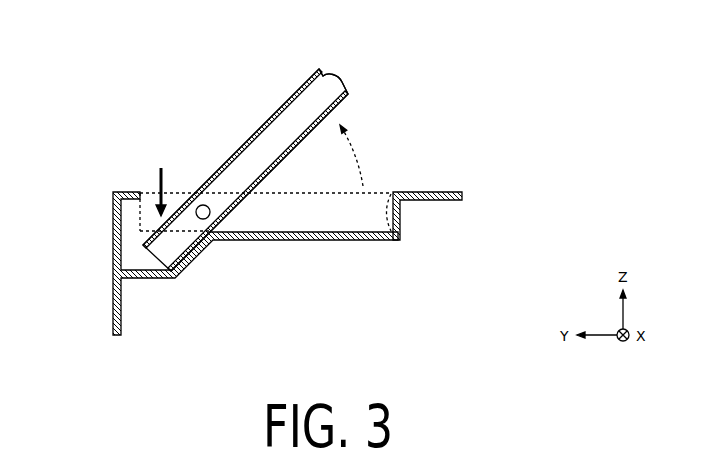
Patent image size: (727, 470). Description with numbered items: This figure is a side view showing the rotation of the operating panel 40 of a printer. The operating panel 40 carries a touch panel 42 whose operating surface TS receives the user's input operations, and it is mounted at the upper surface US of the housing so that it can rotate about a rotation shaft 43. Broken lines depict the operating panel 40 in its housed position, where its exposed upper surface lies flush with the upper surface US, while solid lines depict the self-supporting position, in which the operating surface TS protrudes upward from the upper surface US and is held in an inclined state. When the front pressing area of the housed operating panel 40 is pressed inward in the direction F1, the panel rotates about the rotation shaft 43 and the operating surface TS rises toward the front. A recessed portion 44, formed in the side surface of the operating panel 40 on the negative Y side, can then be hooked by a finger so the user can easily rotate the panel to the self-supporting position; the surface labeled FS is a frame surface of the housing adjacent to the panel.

The operating panel 40 is at (289, 113).
The touch panel 42 is at (292, 96).
The rotation shaft 43 is at (203, 212).
The recessed portion 44 is at (338, 80).
The front side frame surface FS is at (112, 247).
The upper surface US is at (428, 192).
The operating surface TS is at (247, 139).
The direction F1 is at (161, 180).